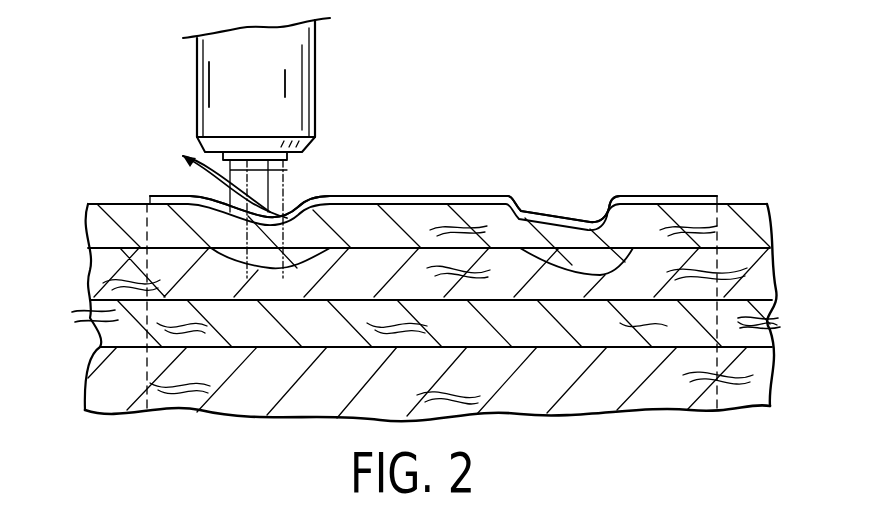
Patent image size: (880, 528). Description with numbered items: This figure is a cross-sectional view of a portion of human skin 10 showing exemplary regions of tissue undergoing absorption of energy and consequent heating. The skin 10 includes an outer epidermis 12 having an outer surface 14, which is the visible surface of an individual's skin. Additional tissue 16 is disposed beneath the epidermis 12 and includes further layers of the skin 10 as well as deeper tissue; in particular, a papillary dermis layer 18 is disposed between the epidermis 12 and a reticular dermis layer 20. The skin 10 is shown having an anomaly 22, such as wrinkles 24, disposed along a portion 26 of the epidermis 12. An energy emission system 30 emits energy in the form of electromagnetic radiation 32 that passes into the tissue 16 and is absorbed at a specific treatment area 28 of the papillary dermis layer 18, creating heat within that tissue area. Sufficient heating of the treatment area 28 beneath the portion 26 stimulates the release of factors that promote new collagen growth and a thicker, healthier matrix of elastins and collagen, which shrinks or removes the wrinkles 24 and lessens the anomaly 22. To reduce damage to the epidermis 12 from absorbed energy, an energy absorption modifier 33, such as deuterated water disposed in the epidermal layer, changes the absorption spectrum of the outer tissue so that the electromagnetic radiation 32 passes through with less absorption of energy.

The skin 10 is at (784, 205).
The epidermis 12 is at (648, 212).
The outer surface 14 is at (438, 200).
The additional tissue 16 is at (58, 250).
The papillary dermis layer 18 is at (90, 262).
The reticular dermis layer 20 is at (102, 337).
The anomaly 22 is at (301, 190).
The wrinkles 24 is at (280, 216).
The portion 26 is at (148, 265).
The treatment area 28 is at (138, 213).
The energy emission system 30 is at (195, 77).
The electromagnetic radiation 32 is at (217, 174).
The energy absorption modifier 33 is at (448, 197).